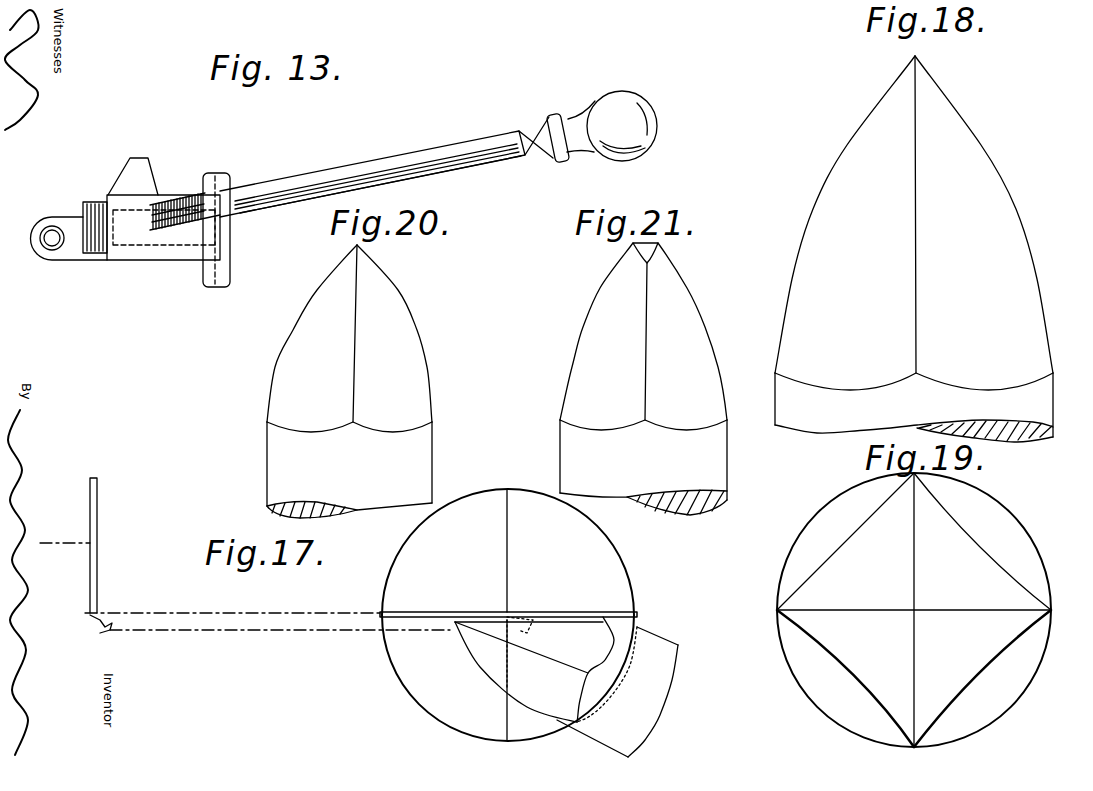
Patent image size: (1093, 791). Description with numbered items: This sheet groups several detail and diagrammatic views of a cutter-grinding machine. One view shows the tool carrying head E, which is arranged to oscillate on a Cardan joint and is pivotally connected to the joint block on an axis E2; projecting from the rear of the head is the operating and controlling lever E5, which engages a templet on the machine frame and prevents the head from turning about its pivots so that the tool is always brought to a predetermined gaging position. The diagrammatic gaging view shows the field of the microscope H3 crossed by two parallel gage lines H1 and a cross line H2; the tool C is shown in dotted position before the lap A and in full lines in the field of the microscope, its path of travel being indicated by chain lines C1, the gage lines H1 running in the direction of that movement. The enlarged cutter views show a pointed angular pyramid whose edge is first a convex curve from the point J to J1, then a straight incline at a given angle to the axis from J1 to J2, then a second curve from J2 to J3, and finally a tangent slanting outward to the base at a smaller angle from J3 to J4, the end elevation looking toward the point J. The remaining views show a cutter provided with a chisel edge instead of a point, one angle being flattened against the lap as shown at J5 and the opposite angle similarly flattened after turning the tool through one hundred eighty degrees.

In FIG. 13, the axis E2 is at (52, 247).
In FIG. 13, the tool carrying head E is at (160, 255).
In FIG. 13, the operating and controlling lever E5 is at (457, 163).
In FIG. 18, the point of the cutter J is at (919, 58).
In FIG. 19, the point of the cutter J is at (920, 606).
In FIG. 18, the end of convex tip J1 is at (1036, 145).
In FIG. 20, the end of convex tip J1 is at (427, 290).
In FIG. 21, the end of convex tip J1 is at (710, 288).
In FIG. 18, the end of straight incline J2 is at (1055, 209).
In FIG. 20, the end of straight incline J2 is at (432, 330).
In FIG. 21, the end of straight incline J2 is at (725, 327).
In FIG. 18, the end of second curve J3 is at (1060, 279).
In FIG. 20, the end of second curve J3 is at (445, 367).
In FIG. 21, the end of second curve J3 is at (735, 367).
In FIG. 18, the base end of tangent J4 is at (1080, 373).
In FIG. 20, the base end of tangent J4 is at (455, 422).
In FIG. 21, the base end of tangent J4 is at (745, 420).
In FIG. 19, the base end of tangent J4 is at (920, 736).
In FIG. 20, the flattened angle J5 is at (378, 256).
In FIG. 21, the flattened angle J5 is at (660, 247).
In FIG. 18, the tool C is at (914, 407).
In FIG. 20, the tool C is at (349, 470).
In FIG. 21, the tool C is at (643, 467).
In FIG. 19, the tool C is at (914, 610).
In FIG. 17, the tool C is at (613, 730).
In FIG. 17, the chain lines C1 is at (262, 613).
In FIG. 17, the lap A is at (97, 527).
In FIG. 17, the gage lines H1 is at (652, 633).
In FIG. 17, the cross line H2 is at (510, 586).
In FIG. 17, the field of the microscope H3 is at (415, 538).